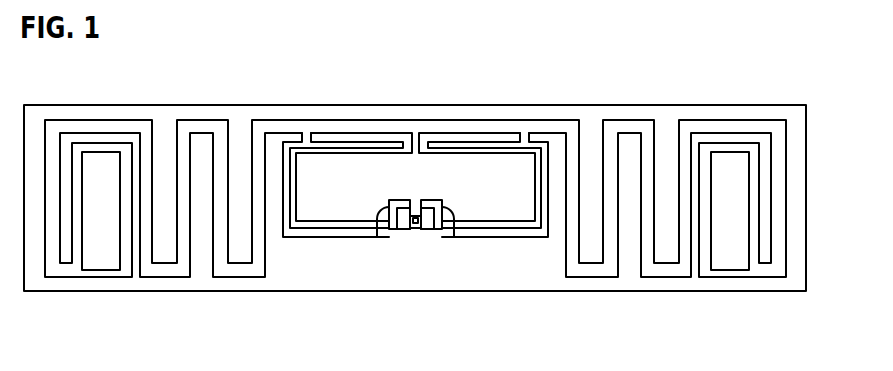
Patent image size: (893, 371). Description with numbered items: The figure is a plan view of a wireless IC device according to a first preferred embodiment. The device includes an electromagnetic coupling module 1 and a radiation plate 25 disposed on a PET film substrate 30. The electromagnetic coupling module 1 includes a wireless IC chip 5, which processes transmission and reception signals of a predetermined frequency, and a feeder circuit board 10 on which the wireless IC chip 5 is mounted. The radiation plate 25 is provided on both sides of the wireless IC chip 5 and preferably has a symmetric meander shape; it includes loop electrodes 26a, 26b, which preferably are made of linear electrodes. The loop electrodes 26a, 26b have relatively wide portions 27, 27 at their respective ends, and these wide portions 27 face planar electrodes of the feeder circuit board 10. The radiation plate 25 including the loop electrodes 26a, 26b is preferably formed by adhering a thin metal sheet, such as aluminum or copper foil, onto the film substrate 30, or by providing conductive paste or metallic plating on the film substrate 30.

The electromagnetic coupling module 1 is at (405, 233).
The wireless IC chip 5 is at (415, 229).
The feeder circuit board 10 is at (419, 279).
The radiation plate 25 is at (201, 120).
The loop electrode 26a is at (532, 201).
The loop electrode 26b is at (548, 213).
The wide portion 27 is at (380, 238).
The film substrate 30 is at (598, 105).